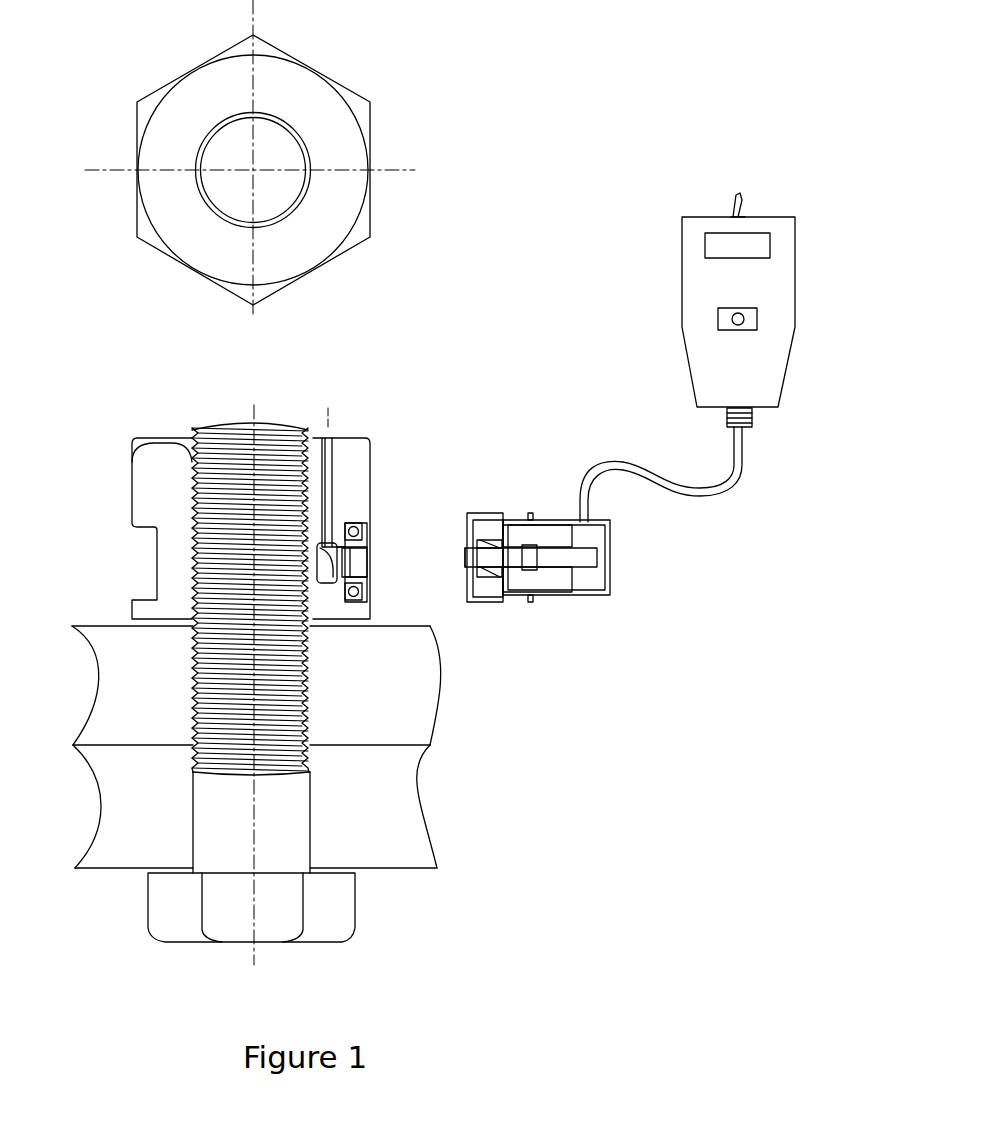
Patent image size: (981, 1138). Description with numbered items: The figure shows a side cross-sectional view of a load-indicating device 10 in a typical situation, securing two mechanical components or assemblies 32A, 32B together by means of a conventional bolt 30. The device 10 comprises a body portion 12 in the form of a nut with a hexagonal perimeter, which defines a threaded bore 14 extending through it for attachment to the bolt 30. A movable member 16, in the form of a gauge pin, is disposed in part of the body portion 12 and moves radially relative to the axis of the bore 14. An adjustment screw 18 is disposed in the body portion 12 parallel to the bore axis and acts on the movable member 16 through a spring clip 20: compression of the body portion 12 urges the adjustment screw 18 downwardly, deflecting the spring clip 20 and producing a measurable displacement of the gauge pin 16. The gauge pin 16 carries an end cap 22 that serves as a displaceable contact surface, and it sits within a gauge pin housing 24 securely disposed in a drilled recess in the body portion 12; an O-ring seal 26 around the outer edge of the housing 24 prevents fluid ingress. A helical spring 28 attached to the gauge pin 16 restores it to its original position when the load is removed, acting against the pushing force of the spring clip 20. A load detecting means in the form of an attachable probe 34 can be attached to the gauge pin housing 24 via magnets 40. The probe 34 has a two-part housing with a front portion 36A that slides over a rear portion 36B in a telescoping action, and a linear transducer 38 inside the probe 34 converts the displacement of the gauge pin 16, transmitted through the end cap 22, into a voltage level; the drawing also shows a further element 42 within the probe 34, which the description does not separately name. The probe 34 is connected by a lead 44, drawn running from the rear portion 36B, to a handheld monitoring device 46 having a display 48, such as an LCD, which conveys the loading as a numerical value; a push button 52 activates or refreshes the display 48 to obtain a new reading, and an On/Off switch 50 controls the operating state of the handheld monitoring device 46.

The load-indicating device 10 is at (368, 420).
The body portion 12 is at (338, 110).
The bore 14 is at (192, 562).
The movable member 16 is at (360, 548).
The adjustment screw 18 is at (337, 478).
The spring clip 20 is at (322, 560).
The end cap 22 is at (368, 565).
The gauge pin housing 24 is at (333, 578).
The O-ring seal 26 is at (347, 527).
The helical spring 28 is at (365, 589).
The bolt 30 is at (298, 855).
The mechanical component 32A is at (100, 706).
The mechanical component 32B is at (113, 821).
The attachable probe 34 is at (576, 566).
The front portion 36A is at (497, 517).
The rear portion 36B is at (612, 549).
The linear transducer 38 is at (557, 565).
The magnets 40 is at (467, 540).
The pin collar 42 is at (493, 572).
The cable 44 is at (714, 496).
The handheld monitoring device 46 is at (682, 307).
The display 48 is at (705, 245).
The On/Off switch 50 is at (738, 190).
The push button 52 is at (745, 323).